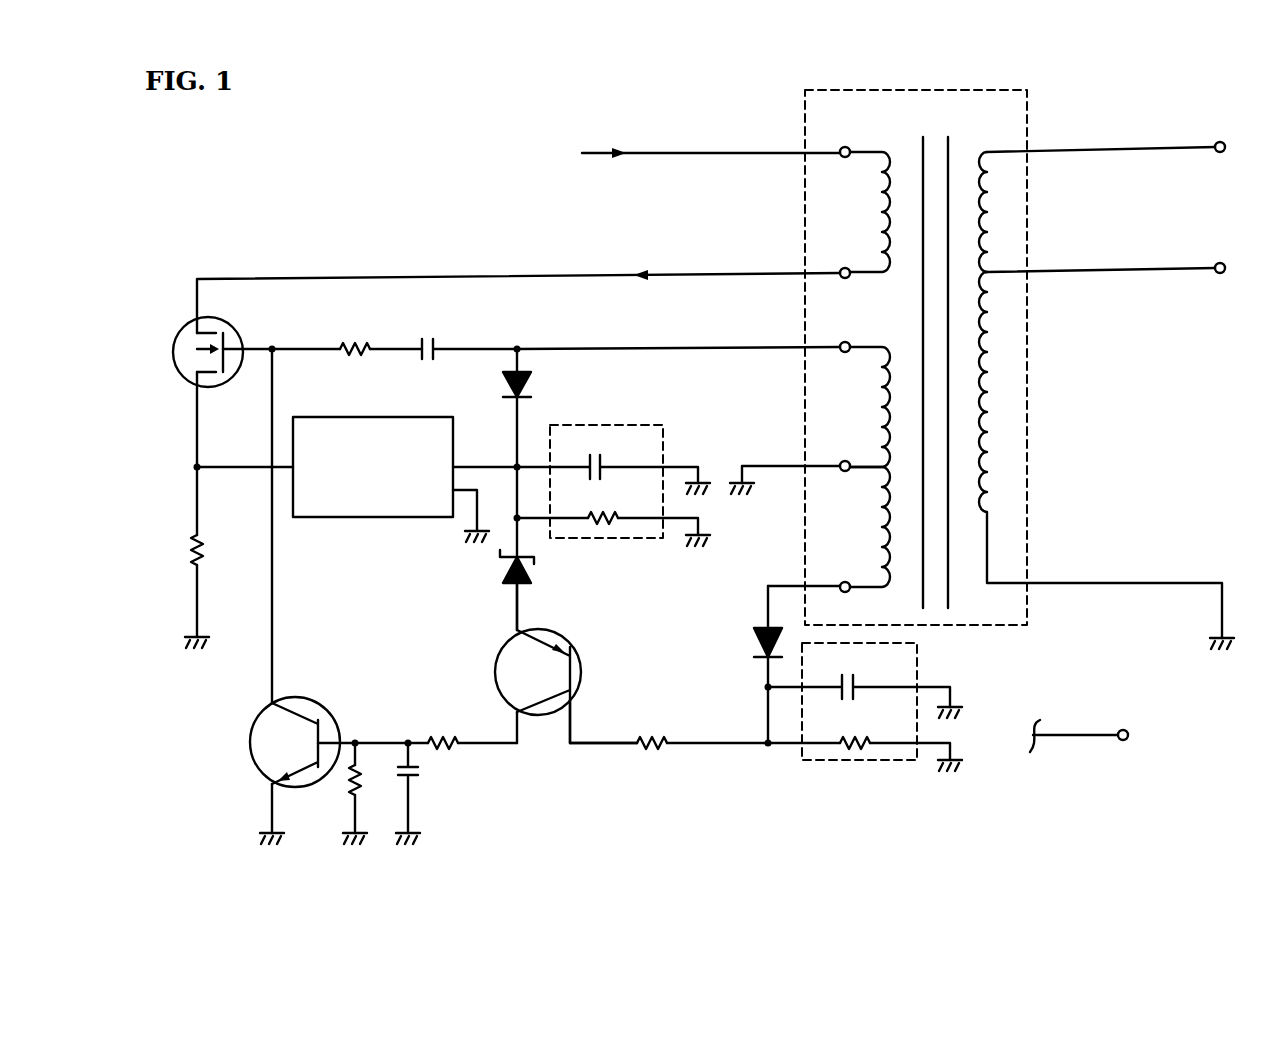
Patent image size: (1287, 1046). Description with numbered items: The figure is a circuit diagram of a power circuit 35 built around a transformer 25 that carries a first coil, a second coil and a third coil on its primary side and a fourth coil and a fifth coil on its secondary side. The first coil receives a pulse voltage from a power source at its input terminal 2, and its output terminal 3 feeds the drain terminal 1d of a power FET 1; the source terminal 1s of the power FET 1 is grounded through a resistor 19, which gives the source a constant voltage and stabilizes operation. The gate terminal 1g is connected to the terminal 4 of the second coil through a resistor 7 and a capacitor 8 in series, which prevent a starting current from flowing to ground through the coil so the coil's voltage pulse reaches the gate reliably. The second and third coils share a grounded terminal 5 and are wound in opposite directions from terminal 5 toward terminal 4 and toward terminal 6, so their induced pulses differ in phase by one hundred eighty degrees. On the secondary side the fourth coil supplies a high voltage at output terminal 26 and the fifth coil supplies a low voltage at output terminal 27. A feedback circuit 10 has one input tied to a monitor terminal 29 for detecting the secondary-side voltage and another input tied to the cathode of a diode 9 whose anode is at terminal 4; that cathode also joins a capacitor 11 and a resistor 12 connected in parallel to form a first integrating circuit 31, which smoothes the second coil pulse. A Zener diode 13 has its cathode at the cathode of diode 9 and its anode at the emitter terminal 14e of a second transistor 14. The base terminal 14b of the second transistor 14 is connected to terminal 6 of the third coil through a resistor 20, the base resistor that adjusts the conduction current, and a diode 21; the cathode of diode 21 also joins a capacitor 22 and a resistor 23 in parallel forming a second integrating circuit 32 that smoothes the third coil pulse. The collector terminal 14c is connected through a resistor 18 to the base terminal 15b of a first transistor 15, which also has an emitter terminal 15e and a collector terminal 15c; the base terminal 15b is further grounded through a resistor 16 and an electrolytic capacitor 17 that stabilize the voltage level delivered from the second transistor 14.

The power FET 1 is at (175, 333).
The drain terminal 1d is at (195, 295).
The gate terminal 1g is at (232, 349).
The source terminal 1s is at (196, 420).
The terminal 2 is at (838, 150).
The output terminal 3 is at (838, 271).
The terminal 4 is at (838, 345).
The terminal 5 is at (838, 463).
The terminal 6 is at (838, 583).
The resistor 7 is at (355, 341).
The capacitor 8 is at (430, 338).
The diode 9 is at (532, 386).
The feedback circuit 10 is at (360, 519).
The capacitor 11 is at (590, 455).
The resistor 12 is at (612, 530).
The Zener diode 13 is at (532, 582).
The second transistor 14 is at (570, 642).
The base terminal 14b is at (575, 725).
The collector terminal 14c is at (519, 748).
The emitter terminal 14e is at (517, 610).
The first transistor 15 is at (250, 742).
The base terminal 15b is at (330, 742).
The collector terminal 15c is at (272, 693).
The emitter terminal 15e is at (270, 795).
The resistor 16 is at (362, 808).
The electrolytic capacitor 17 is at (420, 772).
The resistor 18 is at (440, 738).
The resistor 19 is at (195, 545).
The resistor 20 is at (652, 748).
The diode 21 is at (753, 645).
The capacitor 22 is at (838, 695).
The resistor 23 is at (855, 758).
The transformer 25 is at (890, 90).
The output terminal 26 is at (1216, 142).
The output terminal 27 is at (1214, 262).
The monitor terminal 29 is at (1085, 742).
The first integrating circuit 31 is at (665, 440).
The second integrating circuit 32 is at (920, 662).
The power circuit 35 is at (542, 134).